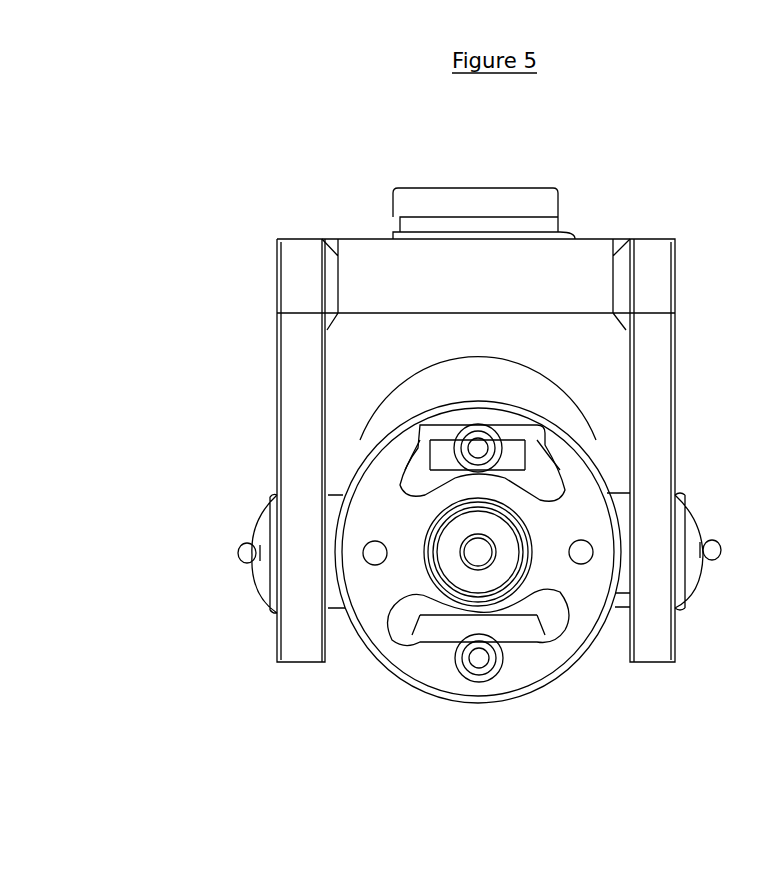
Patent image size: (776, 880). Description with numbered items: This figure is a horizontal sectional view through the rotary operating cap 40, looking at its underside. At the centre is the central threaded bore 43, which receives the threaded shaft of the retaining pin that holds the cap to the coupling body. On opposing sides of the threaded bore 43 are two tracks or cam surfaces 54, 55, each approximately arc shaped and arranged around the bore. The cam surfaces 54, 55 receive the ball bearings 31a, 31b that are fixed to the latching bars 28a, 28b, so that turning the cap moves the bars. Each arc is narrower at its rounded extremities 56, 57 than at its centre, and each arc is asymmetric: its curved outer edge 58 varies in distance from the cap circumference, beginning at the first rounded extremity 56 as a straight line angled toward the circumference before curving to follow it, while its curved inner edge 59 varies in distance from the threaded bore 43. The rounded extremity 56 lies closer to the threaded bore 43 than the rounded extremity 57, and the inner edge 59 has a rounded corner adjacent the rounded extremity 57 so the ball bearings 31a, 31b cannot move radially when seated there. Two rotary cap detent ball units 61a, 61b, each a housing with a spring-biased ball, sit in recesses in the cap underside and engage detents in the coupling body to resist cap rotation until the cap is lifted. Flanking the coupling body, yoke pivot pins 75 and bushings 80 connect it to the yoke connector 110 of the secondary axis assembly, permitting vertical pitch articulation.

The yoke connector 110 is at (297, 357).
The cam surface 54 is at (413, 447).
The yoke pivot pin 75 is at (257, 520).
The rounded extremity 56 is at (430, 480).
The bushing 80 is at (320, 463).
The rotary operating cap 40 is at (572, 628).
The cam surface 55 is at (560, 687).
The rotary cap detent ball unit 61a is at (378, 540).
The rotary cap detent ball unit 61b is at (582, 540).
The rounded extremity 57 is at (540, 497).
The latching bar 28a is at (587, 448).
The latching bar 28b is at (413, 647).
The ball bearing 31a is at (520, 440).
The ball bearing 31b is at (520, 680).
The central threaded bore 43 is at (468, 430).
The curved outer edge 58 is at (455, 424).
The curved inner edge 59 is at (527, 418).